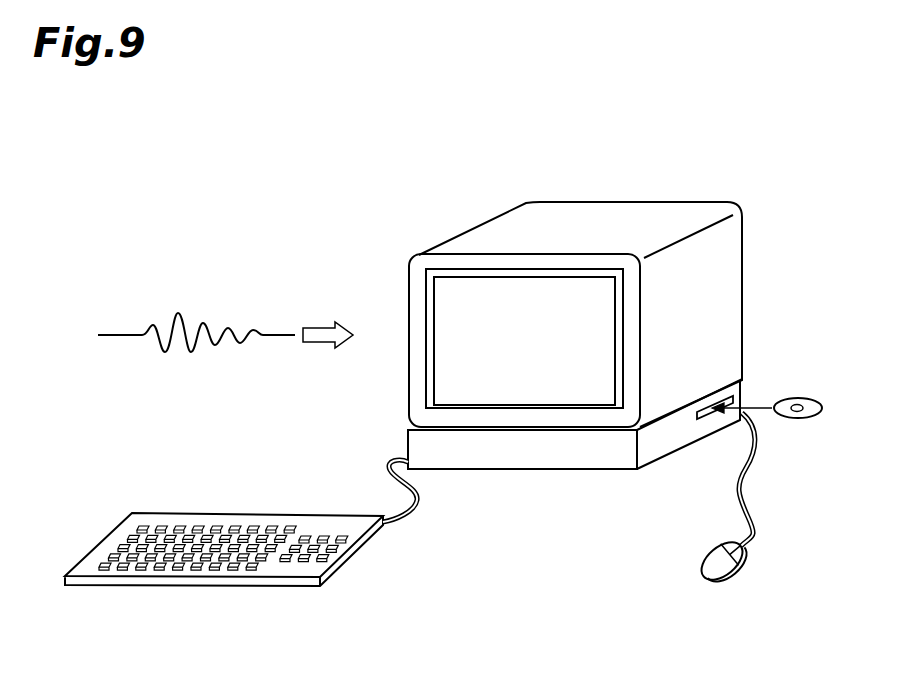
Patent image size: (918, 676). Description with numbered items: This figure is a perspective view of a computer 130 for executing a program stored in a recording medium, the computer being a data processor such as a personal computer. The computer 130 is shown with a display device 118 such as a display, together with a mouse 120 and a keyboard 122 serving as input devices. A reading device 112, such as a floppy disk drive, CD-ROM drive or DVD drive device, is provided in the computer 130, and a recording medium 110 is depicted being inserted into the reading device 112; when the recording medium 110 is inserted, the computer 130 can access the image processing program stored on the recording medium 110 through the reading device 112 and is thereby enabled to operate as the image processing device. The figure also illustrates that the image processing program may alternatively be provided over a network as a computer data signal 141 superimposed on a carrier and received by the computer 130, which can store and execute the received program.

The computer 130 is at (520, 201).
The display device 118 is at (448, 302).
The reading device 112 is at (707, 420).
The recording medium 110 is at (798, 418).
The mouse 120 is at (713, 585).
The keyboard 122 is at (241, 512).
The computer data signal 141 is at (181, 309).